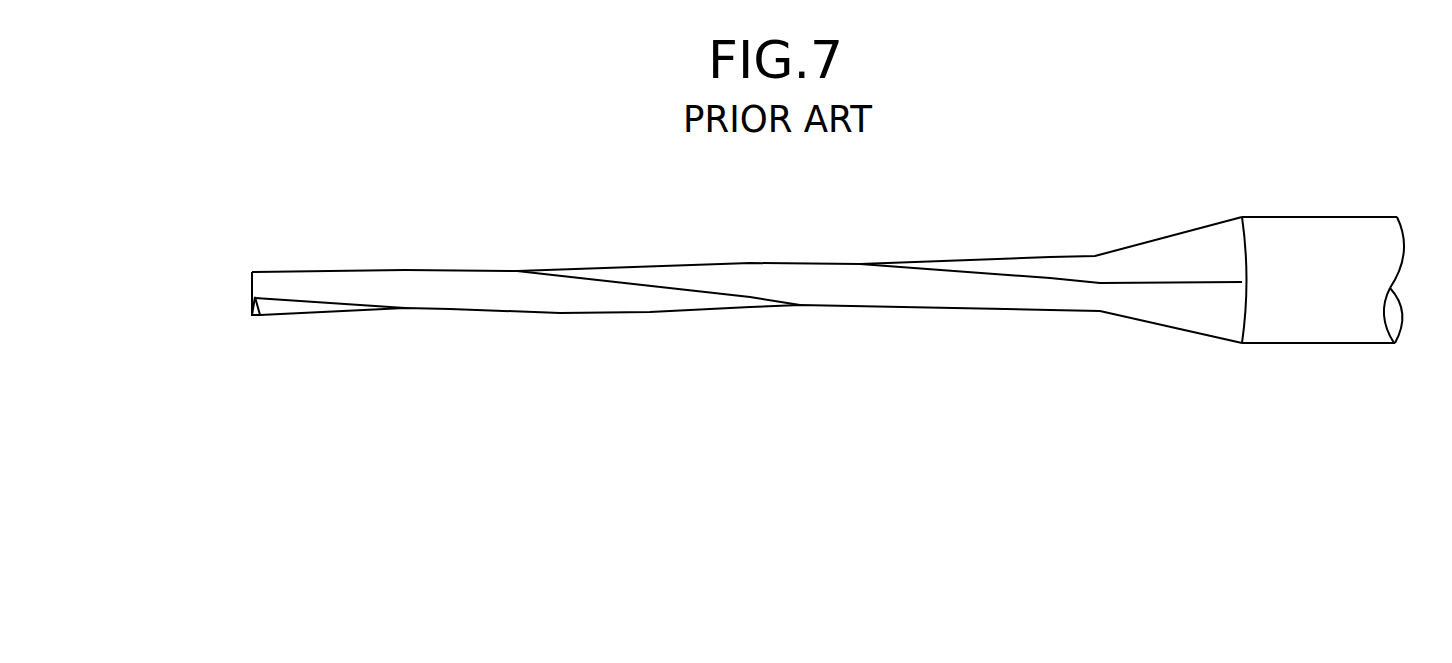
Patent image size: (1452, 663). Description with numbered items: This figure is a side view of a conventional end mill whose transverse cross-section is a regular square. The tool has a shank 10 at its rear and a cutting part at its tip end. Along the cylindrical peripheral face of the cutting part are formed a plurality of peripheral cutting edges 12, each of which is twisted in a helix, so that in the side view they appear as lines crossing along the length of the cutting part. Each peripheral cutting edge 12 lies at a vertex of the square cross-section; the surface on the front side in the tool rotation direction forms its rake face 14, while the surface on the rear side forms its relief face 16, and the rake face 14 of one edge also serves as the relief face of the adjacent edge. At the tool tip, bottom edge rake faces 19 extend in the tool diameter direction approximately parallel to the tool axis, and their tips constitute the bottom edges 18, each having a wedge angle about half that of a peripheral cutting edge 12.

The shank 10 is at (1325, 228).
The peripheral cutting edge 12 is at (610, 280).
The rake face 14 is at (662, 272).
The relief face 16 is at (572, 302).
The bottom edge 18 is at (252, 301).
The bottom edge rake face 19 is at (257, 315).